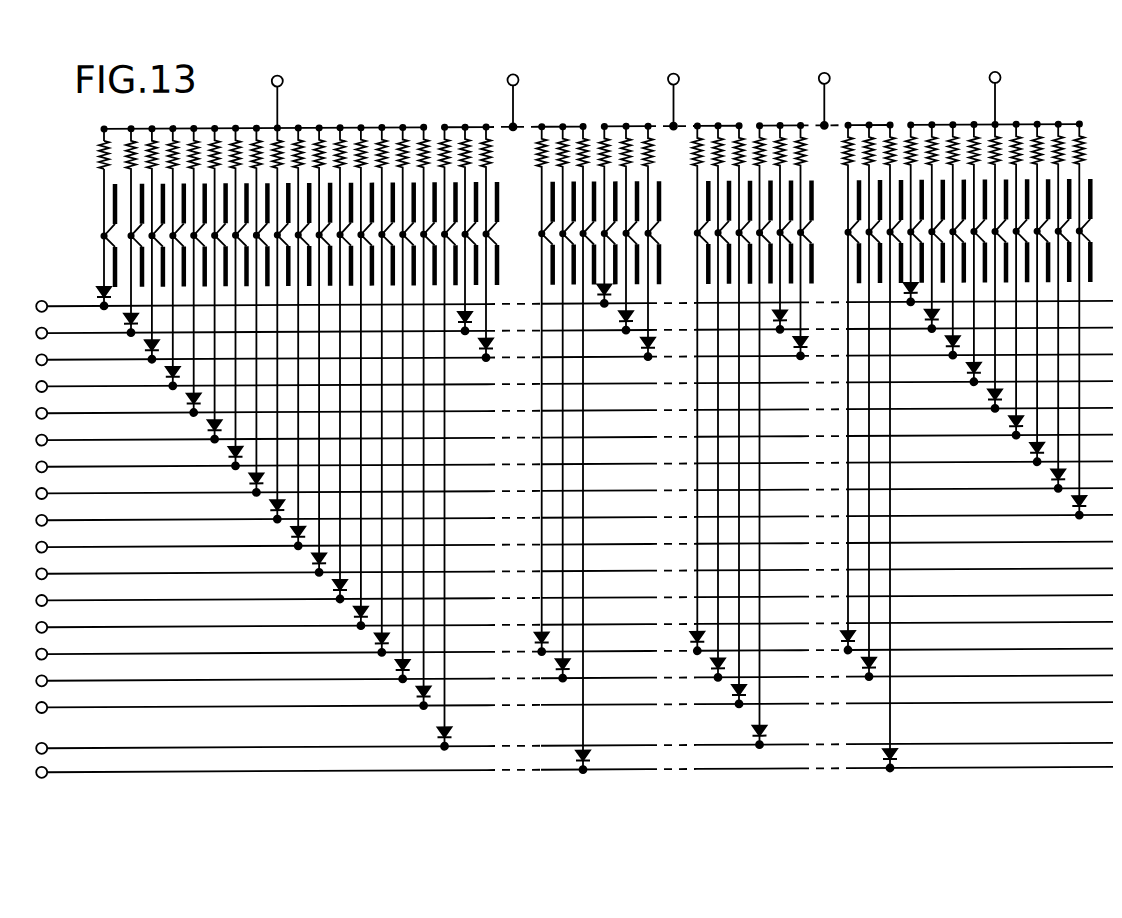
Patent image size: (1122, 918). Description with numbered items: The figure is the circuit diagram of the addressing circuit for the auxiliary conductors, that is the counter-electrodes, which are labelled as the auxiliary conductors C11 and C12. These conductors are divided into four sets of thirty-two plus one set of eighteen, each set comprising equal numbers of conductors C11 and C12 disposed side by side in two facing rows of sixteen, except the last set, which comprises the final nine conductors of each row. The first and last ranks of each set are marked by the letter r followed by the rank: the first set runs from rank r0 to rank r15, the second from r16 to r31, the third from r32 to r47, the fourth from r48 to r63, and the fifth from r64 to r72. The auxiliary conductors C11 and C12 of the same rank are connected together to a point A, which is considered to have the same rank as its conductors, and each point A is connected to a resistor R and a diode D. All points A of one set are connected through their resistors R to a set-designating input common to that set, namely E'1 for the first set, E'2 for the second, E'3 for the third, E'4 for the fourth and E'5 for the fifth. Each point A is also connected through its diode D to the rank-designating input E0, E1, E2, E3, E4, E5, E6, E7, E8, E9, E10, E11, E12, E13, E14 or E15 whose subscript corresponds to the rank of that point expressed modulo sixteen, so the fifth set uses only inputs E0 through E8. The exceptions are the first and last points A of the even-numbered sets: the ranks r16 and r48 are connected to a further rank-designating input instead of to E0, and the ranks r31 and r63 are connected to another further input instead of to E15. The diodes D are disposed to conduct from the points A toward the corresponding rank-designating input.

The resistor R is at (99, 151).
The auxiliary conductor C12 is at (113, 197).
The point A is at (101, 236).
The auxiliary conductor C11 is at (113, 270).
The diode D is at (96, 293).
The rank 0 of auxiliary conductors r0 is at (116, 137).
The rank 15 of auxiliary conductors r15 is at (433, 137).
The rank 16 of auxiliary conductors r16 is at (454, 137).
The rank 31 of auxiliary conductors r31 is at (593, 137).
The rank 32 of auxiliary conductors r32 is at (615, 137).
The rank 47 of auxiliary conductors r47 is at (748, 137).
The rank 48 of auxiliary conductors r48 is at (769, 137).
The rank 63 of auxiliary conductors r63 is at (899, 137).
The rank 64 of auxiliary conductors r64 is at (921, 137).
The rank 72 of auxiliary conductors r72 is at (1089, 137).
The set-designating input E'1 is at (292, 95).
The set-designating input E'2 is at (528, 96).
The set-designating input E'3 is at (688, 95).
The set-designating input E'4 is at (839, 94).
The set-designating input E'5 is at (1010, 91).
The rank-designating input E0 is at (558, 307).
The rank-designating input E1 is at (558, 334).
The rank-designating input E2 is at (558, 360).
The rank-designating input E3 is at (558, 387).
The rank-designating input E4 is at (558, 414).
The rank-designating input E5 is at (558, 441).
The rank-designating input E6 is at (558, 467).
The rank-designating input E7 is at (558, 494).
The rank-designating input E8 is at (558, 521).
The rank-designating input E9 is at (558, 548).
The rank-designating input E10 is at (558, 574).
The rank-designating input E11 is at (558, 601).
The rank-designating input E12 is at (558, 628).
The rank-designating input E13 is at (558, 655).
The rank-designating input E14 is at (558, 681).
The rank-designating input E15 is at (558, 708).